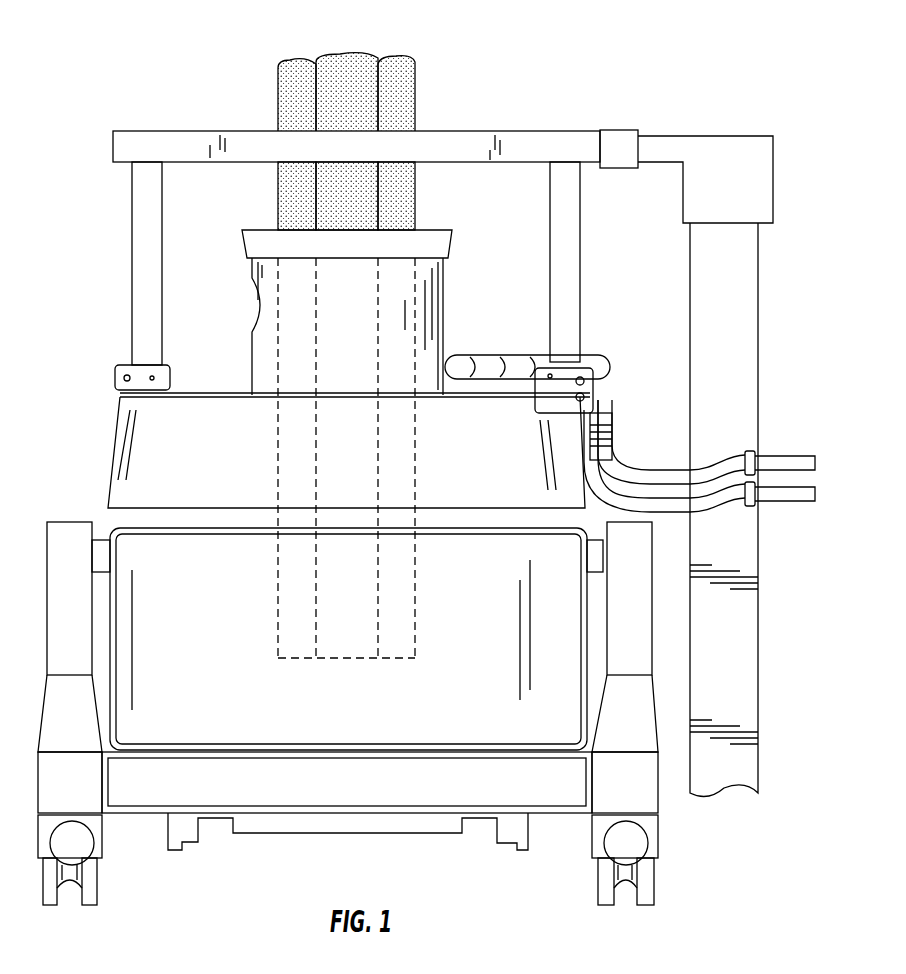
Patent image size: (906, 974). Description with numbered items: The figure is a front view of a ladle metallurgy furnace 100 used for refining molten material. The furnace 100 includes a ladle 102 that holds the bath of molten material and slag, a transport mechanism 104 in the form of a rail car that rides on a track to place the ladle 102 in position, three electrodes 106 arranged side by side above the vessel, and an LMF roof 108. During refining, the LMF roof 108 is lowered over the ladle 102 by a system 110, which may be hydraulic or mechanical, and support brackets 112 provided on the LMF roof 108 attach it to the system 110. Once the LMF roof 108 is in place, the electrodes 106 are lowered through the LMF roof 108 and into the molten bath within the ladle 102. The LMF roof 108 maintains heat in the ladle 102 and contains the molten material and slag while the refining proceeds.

The ladle metallurgy furnace 100 is at (65, 118).
The ladle 102 is at (486, 710).
The transport mechanism 104 is at (155, 785).
The electrodes 106 is at (405, 90).
The LMF roof 108 is at (245, 420).
The system 110 is at (568, 200).
The support brackets 112 is at (545, 372).